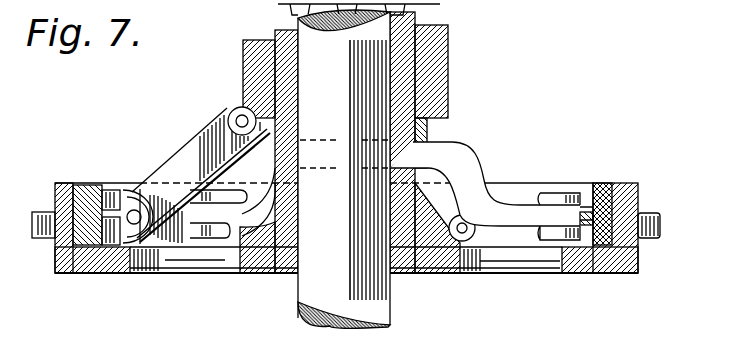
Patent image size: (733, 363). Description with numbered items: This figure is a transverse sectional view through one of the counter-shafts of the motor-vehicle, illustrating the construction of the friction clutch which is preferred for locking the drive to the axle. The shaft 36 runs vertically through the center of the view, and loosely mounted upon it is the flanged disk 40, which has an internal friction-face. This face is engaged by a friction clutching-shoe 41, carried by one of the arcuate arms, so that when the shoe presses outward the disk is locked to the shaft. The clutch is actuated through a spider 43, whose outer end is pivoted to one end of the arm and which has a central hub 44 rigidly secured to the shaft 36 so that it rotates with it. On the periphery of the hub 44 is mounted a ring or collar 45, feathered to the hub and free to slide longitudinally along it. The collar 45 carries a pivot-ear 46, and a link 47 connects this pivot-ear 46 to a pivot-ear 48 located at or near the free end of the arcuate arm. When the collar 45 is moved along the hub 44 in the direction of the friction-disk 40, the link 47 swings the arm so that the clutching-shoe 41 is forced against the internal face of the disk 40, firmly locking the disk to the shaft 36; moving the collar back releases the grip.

The shaft 36 is at (344, 169).
The flanged disk 40 is at (646, 184).
The friction clutching-shoe 41 is at (618, 182).
The spider 43 is at (458, 172).
The central hub 44 is at (423, 21).
The ring or collar 45 is at (447, 66).
The pivot-ear 46 is at (235, 104).
The link 47 is at (203, 144).
The pivot-ear 48 is at (135, 188).